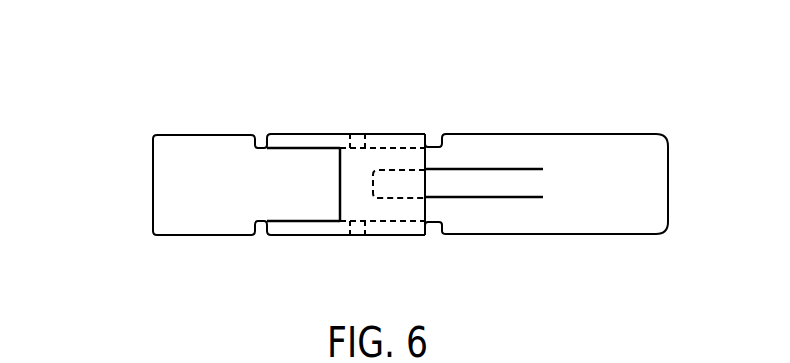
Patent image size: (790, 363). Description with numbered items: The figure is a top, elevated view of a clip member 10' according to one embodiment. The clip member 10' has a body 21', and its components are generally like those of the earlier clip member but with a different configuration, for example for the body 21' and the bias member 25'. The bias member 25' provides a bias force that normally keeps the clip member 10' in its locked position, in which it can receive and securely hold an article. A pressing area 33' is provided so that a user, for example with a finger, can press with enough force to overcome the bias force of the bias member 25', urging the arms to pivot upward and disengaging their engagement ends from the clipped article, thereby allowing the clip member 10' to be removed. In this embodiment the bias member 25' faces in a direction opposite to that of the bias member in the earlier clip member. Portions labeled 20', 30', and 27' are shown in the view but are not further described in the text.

The clip member 10' is at (380, 172).
The plug body 20' is at (195, 142).
The body 21' is at (205, 105).
The coupling section 30' is at (382, 135).
The pressing area 33' is at (399, 149).
The bias member 25' is at (484, 142).
The housing body 27' is at (546, 153).